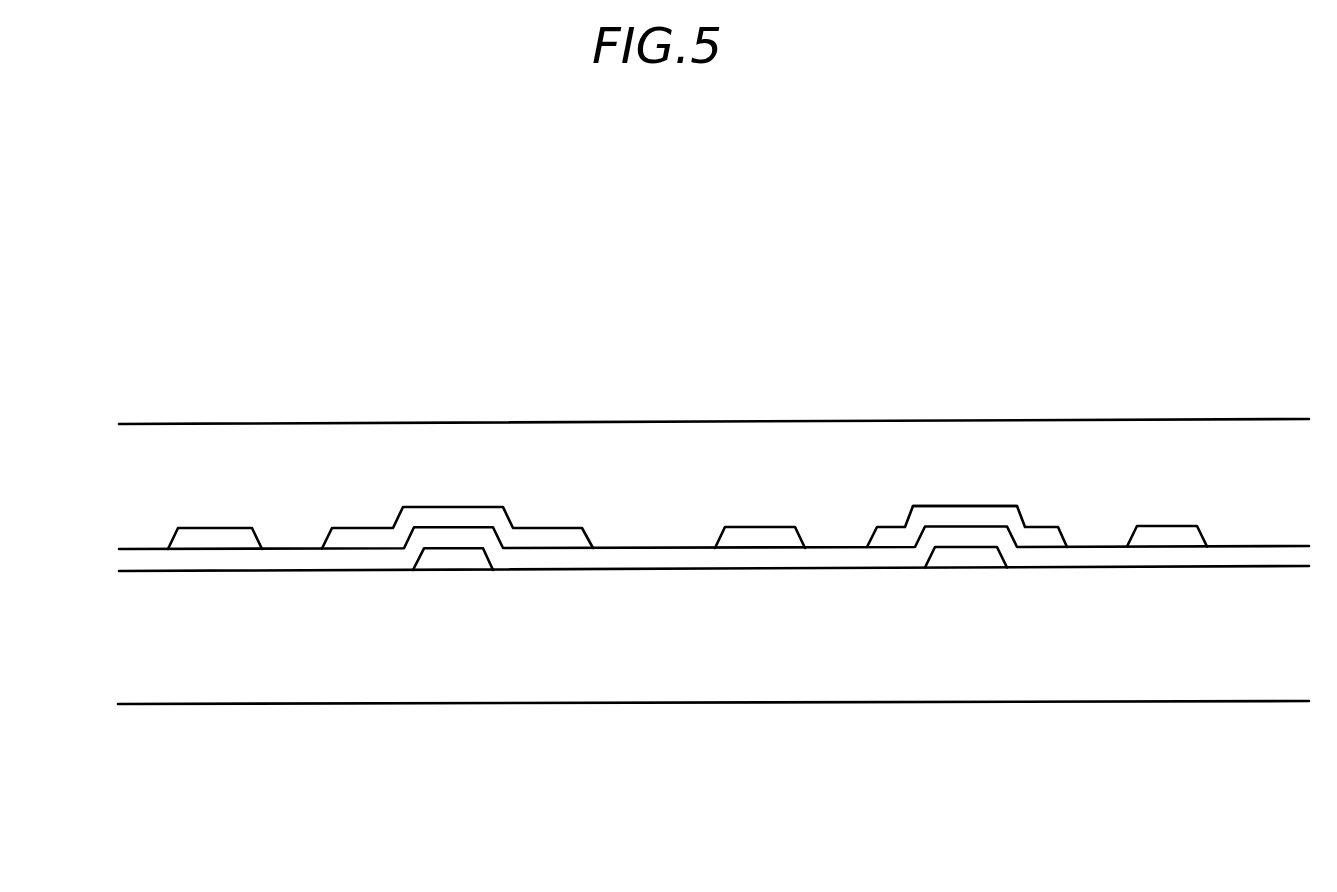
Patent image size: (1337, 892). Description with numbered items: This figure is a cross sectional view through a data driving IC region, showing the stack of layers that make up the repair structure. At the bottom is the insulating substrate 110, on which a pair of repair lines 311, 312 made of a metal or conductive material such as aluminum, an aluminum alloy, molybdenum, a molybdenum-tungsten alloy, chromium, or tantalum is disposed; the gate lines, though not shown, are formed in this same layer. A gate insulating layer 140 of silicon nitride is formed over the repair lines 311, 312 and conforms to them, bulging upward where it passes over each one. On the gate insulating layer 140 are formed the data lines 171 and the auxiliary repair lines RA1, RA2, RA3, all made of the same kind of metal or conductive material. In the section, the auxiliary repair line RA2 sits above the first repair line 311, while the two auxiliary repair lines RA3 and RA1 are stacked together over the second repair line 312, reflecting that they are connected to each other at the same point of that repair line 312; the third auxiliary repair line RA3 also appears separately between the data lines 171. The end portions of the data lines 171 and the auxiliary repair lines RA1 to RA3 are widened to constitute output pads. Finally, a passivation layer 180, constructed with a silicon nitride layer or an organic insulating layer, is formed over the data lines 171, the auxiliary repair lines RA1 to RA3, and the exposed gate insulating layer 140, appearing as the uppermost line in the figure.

The insulating substrate 110 is at (570, 673).
The gate insulating layer 140 is at (683, 557).
The data line 171 is at (207, 537).
The passivation layer 180 is at (733, 452).
The repair line 311 is at (451, 556).
The repair line 312 is at (978, 555).
The auxiliary repair line RA1 is at (1022, 523).
The auxiliary repair line RA2 is at (352, 537).
The auxiliary repair line RA3 is at (768, 537).